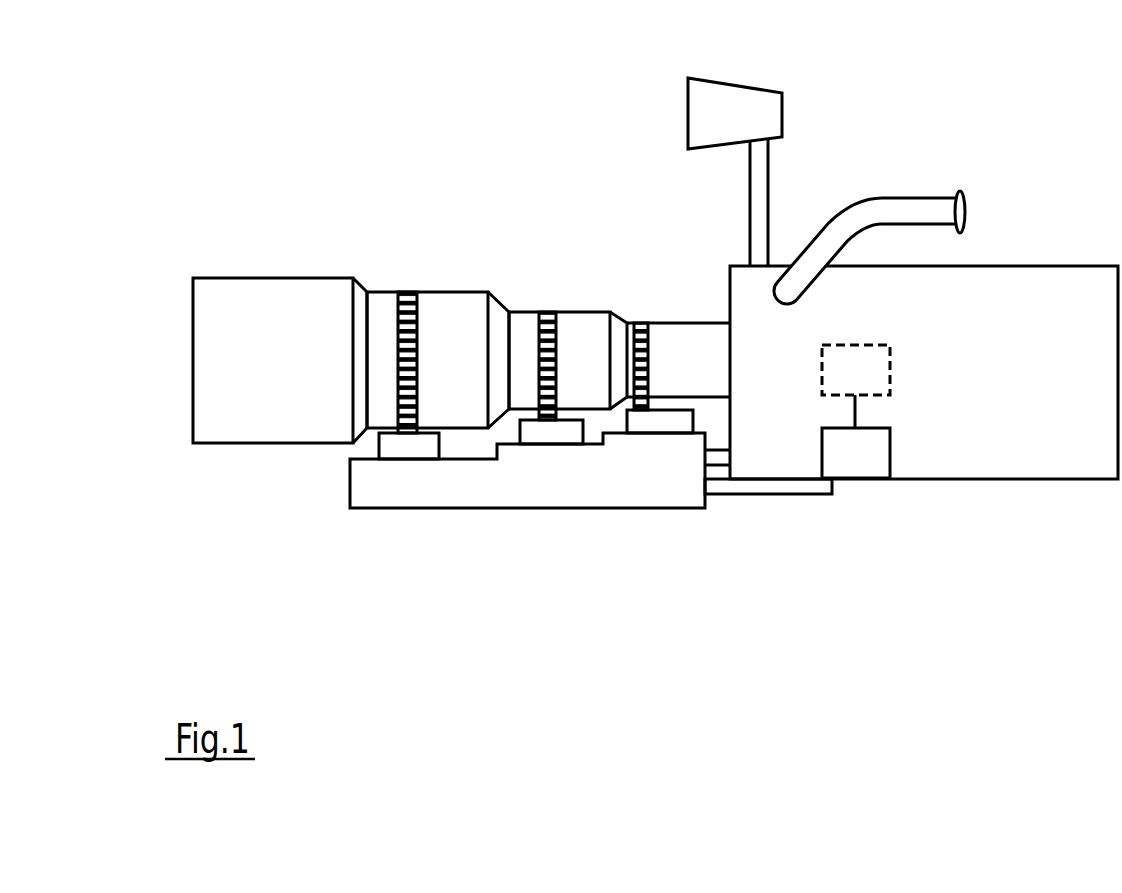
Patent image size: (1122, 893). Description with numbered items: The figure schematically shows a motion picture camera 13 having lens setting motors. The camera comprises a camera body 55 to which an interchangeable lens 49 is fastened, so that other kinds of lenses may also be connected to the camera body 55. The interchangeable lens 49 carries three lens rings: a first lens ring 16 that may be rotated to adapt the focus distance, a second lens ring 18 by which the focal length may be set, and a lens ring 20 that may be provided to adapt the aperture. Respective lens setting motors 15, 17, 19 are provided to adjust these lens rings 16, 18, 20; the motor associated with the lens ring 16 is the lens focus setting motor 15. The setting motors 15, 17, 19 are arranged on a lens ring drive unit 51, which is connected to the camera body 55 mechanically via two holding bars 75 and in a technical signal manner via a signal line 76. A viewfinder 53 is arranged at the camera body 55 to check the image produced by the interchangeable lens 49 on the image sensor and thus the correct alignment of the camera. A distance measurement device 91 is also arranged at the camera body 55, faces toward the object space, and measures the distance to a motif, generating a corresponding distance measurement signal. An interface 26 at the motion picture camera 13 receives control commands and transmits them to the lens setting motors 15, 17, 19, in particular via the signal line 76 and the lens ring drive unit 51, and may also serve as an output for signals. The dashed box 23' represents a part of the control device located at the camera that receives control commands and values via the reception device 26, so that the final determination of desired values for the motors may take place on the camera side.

The motion picture camera 13 is at (1080, 132).
The interchangeable lens 49 is at (559, 253).
The first lens ring 16 is at (407, 292).
The second lens ring 18 is at (548, 312).
The lens ring 20 is at (642, 323).
The lens focus setting motor 15 is at (396, 451).
The lens setting motor 17 is at (555, 433).
The lens setting motor 19 is at (652, 422).
The lens ring drive unit 51 is at (442, 488).
The holding bars 75 is at (719, 469).
The signal line 76 is at (829, 500).
The camera body 55 is at (1047, 297).
The distance measurement device 91 is at (766, 117).
The viewfinder 53 is at (881, 208).
The part of the control device 23' is at (856, 386).
The interface 26 is at (842, 470).